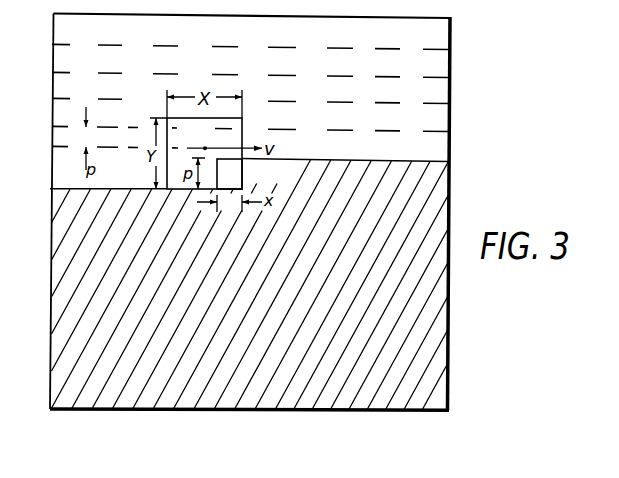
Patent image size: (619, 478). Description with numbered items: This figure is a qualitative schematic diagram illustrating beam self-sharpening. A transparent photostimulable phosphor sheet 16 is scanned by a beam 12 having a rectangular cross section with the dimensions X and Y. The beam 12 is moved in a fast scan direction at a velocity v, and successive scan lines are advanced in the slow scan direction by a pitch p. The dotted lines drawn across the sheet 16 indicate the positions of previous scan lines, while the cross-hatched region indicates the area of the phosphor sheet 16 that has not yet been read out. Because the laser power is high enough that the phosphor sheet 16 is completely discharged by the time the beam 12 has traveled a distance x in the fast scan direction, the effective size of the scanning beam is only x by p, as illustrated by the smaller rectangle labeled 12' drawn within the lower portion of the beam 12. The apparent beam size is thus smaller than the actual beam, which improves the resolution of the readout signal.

The transparent photostimulable phosphor sheet 16 is at (452, 61).
The beam 12 is at (228, 146).
The rectangle indicating effective size of the scanning beam 12' is at (260, 174).